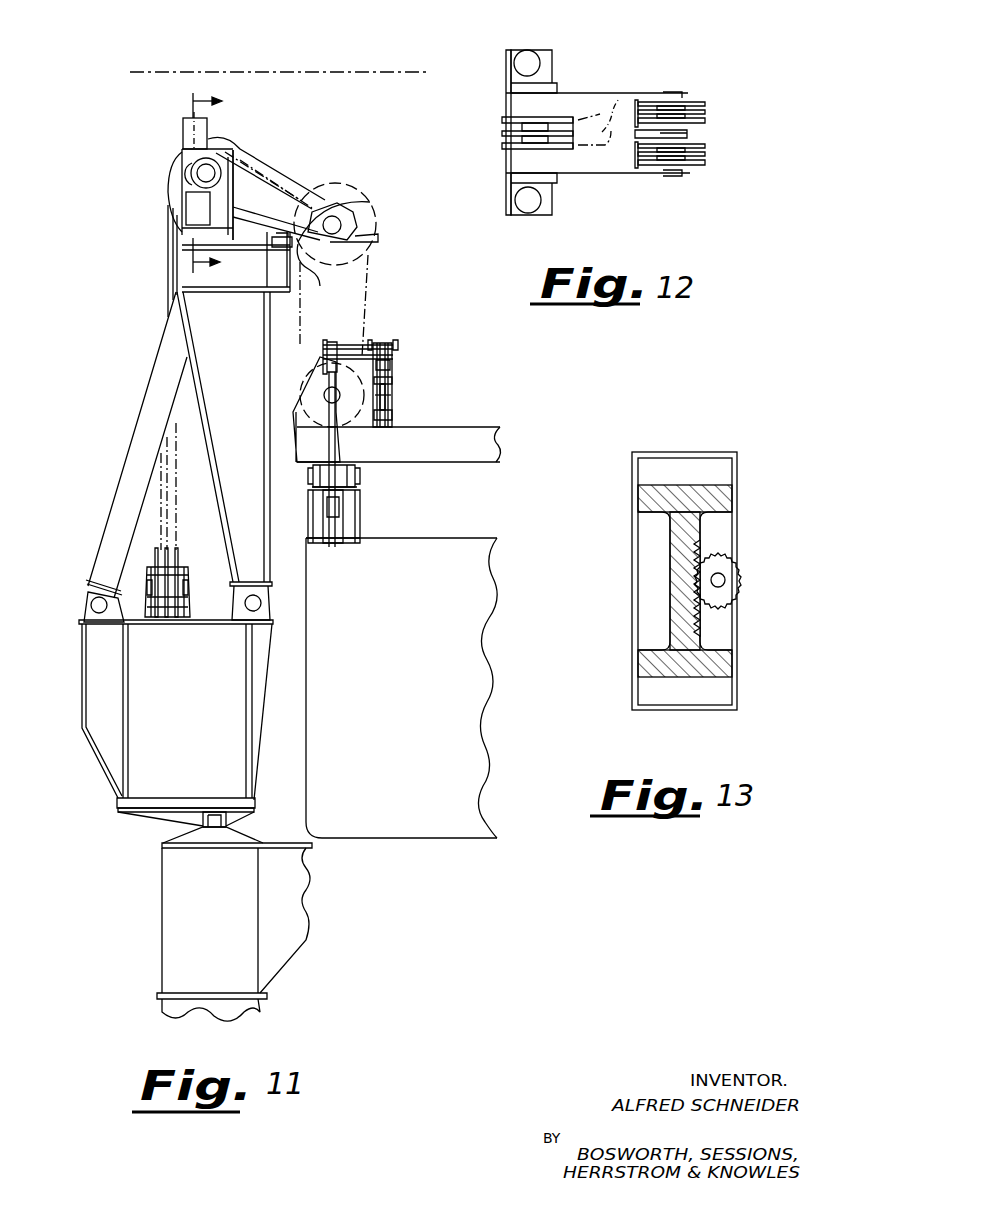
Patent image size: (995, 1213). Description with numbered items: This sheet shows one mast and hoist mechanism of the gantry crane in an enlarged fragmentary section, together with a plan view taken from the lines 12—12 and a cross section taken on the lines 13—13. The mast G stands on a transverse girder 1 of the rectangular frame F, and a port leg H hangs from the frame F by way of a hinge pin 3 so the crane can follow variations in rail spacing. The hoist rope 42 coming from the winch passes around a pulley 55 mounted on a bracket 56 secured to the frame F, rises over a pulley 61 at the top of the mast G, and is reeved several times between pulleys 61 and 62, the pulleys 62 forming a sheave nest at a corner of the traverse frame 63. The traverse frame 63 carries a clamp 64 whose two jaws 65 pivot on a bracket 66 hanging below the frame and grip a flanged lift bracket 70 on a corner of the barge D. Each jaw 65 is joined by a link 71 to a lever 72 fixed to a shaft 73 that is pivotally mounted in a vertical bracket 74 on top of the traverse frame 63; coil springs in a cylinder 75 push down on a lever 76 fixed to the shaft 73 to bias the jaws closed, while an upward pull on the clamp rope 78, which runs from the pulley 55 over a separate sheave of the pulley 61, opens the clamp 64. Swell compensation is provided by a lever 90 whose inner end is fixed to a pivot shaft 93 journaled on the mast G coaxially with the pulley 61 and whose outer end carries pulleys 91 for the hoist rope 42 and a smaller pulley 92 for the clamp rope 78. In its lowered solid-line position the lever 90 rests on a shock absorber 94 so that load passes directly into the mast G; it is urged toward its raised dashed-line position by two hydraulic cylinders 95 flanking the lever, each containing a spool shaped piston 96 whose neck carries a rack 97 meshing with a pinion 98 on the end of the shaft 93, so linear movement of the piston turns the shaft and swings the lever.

In FIG. 11, the transverse girder 1 is at (78, 656).
In FIG. 11, the hinge pin 3 is at (232, 822).
In FIG. 11, the section line 12— 12 is at (143, 100).
In FIG. 11, the section line 13— 13 is at (223, 183).
In FIG. 11, the hoist rope 42 is at (298, 170).
In FIG. 12, the hoist rope 42 is at (590, 114).
In FIG. 11, the pulley 55 is at (180, 568).
In FIG. 11, the bracket 56 is at (188, 600).
In FIG. 11, the pulley 61 is at (172, 163).
In FIG. 12, the pulley 61 is at (538, 114).
In FIG. 11, the pulley 62 is at (304, 392).
In FIG. 11, the traverse frame 63 is at (450, 425).
In FIG. 11, the clamp 64 is at (360, 480).
In FIG. 11, the jaw 65 is at (348, 520).
In FIG. 11, the bracket 66 is at (356, 466).
In FIG. 11, the flanged lift bracket 70 is at (356, 532).
In FIG. 11, the link 71 is at (322, 432).
In FIG. 11, the lever 72 is at (336, 352).
In FIG. 11, the shaft 73 is at (359, 346).
In FIG. 11, the vertical bracket 74 is at (390, 391).
In FIG. 11, the cylinder 75 is at (386, 400).
In FIG. 11, the lever 76 is at (394, 345).
In FIG. 11, the clamp rope 78 is at (166, 492).
In FIG. 12, the clamp rope 78 is at (614, 108).
In FIG. 11, the lever 90 is at (244, 178).
In FIG. 12, the lever 90 is at (620, 156).
In FIG. 11, the pulley 91 is at (366, 216).
In FIG. 12, the pulley 91 is at (680, 108).
In FIG. 11, the pulley 92 is at (334, 206).
In FIG. 12, the pulley 92 is at (688, 136).
In FIG. 11, the pivot shaft 93 is at (202, 172).
In FIG. 11, the shock absorber 94 is at (302, 250).
In FIG. 11, the hydraulic cylinder 95 is at (184, 128).
In FIG. 12, the hydraulic cylinder 95 is at (534, 51).
In FIG. 13, the hydraulic cylinder 95 is at (634, 578).
In FIG. 13, the piston 96 is at (670, 538).
In FIG. 13, the rack 97 is at (706, 543).
In FIG. 13, the pinion 98 is at (746, 580).
In FIG. 11, the mast G is at (140, 388).
In FIG. 11, the frame F is at (175, 673).
In FIG. 11, the barge D is at (401, 688).
In FIG. 11, the port leg H is at (234, 924).